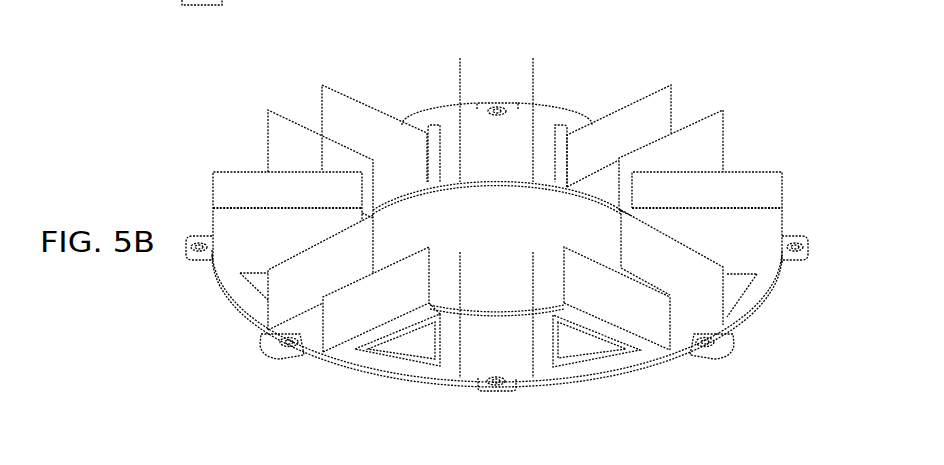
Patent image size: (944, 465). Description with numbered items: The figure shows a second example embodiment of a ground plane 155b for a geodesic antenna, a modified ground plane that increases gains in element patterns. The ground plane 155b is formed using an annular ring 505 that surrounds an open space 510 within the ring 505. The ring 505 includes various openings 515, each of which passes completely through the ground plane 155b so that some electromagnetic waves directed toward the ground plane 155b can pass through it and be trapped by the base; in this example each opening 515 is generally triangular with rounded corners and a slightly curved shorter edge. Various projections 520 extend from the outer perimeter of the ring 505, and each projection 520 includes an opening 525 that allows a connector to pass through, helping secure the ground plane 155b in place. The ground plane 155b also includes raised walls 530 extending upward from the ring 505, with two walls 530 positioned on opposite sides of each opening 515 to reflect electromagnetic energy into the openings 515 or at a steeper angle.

The ground plane 155b is at (598, 70).
The annular ring 505 is at (240, 306).
The open space 510 is at (498, 218).
The opening 515 is at (432, 359).
The projection 520 is at (704, 365).
The opening 525 is at (512, 394).
The raised wall 530 is at (712, 136).